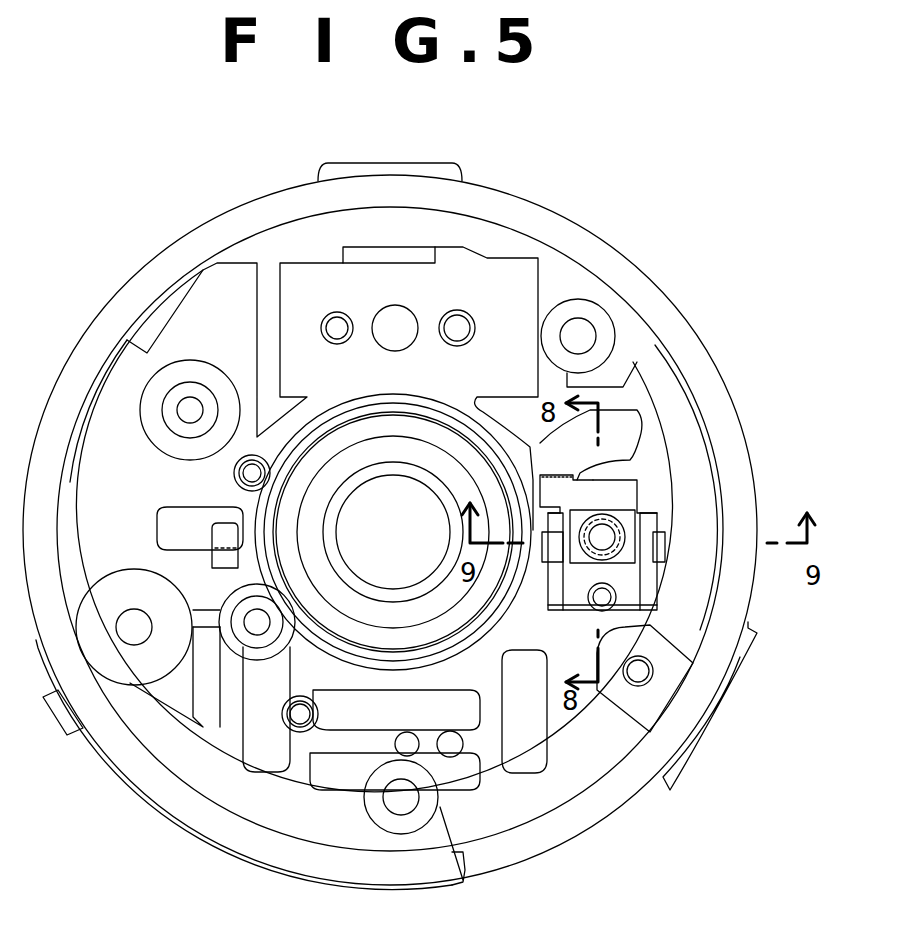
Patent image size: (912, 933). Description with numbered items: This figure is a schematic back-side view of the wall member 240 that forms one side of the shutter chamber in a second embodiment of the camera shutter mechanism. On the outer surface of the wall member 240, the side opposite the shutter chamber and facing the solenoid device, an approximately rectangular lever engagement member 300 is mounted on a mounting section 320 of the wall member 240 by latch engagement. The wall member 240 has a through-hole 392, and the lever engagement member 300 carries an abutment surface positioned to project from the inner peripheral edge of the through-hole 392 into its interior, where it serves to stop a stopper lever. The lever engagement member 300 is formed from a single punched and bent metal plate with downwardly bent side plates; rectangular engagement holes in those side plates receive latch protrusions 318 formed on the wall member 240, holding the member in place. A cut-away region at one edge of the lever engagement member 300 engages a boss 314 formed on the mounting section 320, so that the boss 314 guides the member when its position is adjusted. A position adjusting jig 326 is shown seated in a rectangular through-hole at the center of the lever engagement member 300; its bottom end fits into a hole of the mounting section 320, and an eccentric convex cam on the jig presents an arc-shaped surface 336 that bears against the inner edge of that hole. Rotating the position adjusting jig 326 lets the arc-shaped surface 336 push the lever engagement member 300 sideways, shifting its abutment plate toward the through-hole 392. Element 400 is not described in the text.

The wall member 240 is at (205, 302).
The lever engagement member 300 is at (640, 487).
The boss 314 is at (637, 607).
The latch protrusions 318 is at (548, 553).
The mounting section 320 is at (580, 588).
The position adjusting jig 326 is at (595, 520).
The arc-shaped surface 336 is at (617, 513).
The through-hole 392 is at (637, 425).
The holder bracket 400 is at (552, 470).